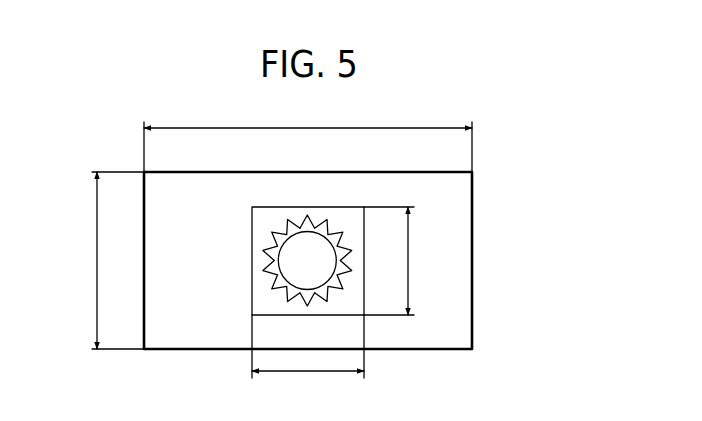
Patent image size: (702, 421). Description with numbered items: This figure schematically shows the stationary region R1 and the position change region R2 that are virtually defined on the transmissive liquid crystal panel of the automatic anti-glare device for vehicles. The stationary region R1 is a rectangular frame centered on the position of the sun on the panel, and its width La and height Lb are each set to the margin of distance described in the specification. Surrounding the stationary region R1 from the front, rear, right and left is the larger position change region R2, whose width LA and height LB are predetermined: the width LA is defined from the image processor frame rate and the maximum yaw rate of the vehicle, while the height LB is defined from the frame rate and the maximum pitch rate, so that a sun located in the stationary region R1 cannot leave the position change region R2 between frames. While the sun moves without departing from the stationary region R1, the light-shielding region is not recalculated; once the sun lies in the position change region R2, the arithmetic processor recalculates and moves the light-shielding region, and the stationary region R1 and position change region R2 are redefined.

The stationary region R1 is at (260, 301).
The position change region R2 is at (457, 204).
The width of position change region LA is at (308, 136).
The height of position change region LB is at (104, 260).
The width of stationary region La is at (308, 359).
The height of stationary region Lb is at (401, 261).